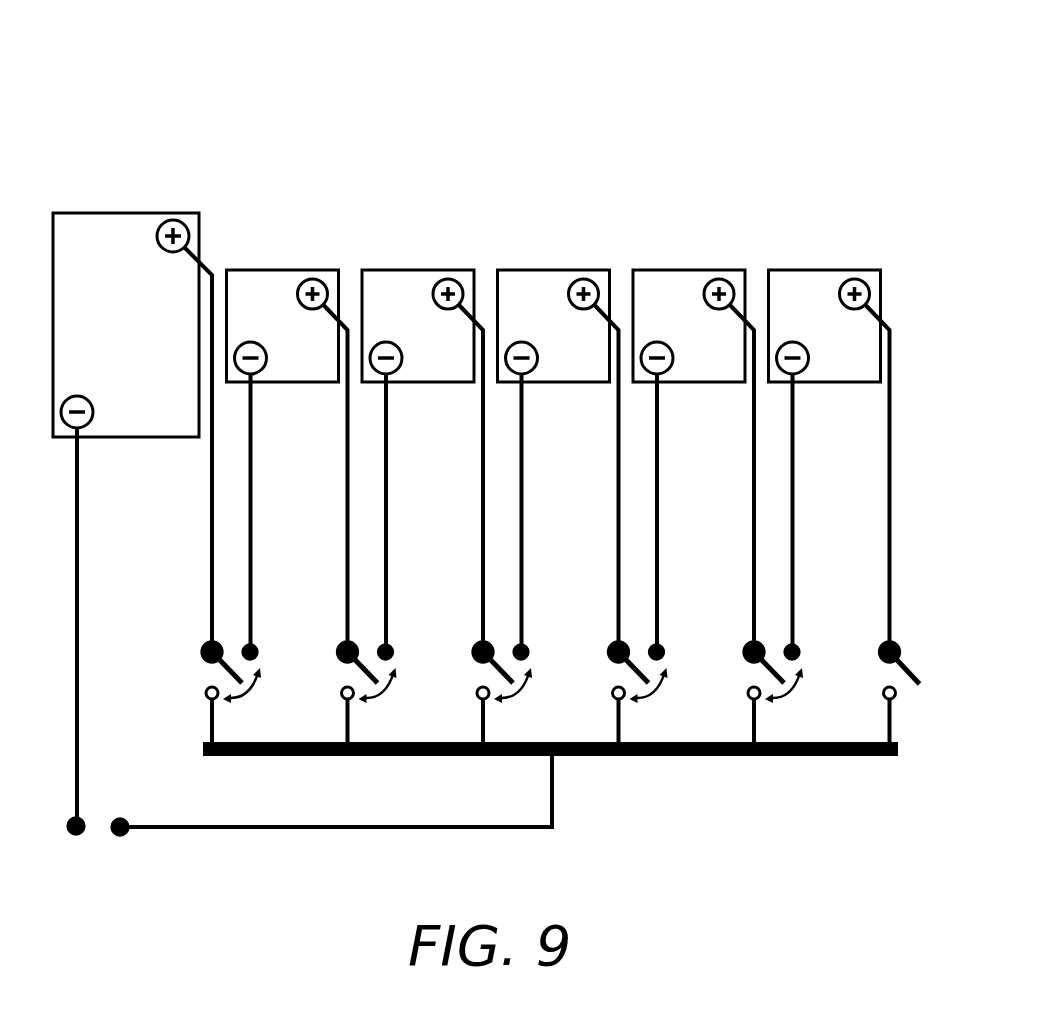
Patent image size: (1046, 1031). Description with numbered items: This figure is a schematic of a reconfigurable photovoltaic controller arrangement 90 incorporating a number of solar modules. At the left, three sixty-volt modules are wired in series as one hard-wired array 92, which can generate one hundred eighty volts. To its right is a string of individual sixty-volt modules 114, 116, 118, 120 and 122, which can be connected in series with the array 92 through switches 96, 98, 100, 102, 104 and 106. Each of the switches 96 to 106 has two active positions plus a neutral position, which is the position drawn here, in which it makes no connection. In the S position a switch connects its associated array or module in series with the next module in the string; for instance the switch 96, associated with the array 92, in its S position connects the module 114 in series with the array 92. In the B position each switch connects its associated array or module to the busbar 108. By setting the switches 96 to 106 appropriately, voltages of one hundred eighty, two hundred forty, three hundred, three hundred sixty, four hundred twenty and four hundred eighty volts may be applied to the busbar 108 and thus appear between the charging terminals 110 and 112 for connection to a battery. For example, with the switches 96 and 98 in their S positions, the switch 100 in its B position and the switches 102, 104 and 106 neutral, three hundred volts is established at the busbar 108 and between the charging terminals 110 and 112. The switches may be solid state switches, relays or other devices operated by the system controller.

The power supply system 90 is at (702, 128).
The hard-wired array 92 is at (122, 213).
The switch 96 is at (206, 643).
The switch 98 is at (340, 643).
The switch 100 is at (478, 643).
The switch 102 is at (614, 643).
The switch 104 is at (748, 643).
The switch 106 is at (884, 643).
The busbar 108 is at (843, 757).
The charging terminal 110 is at (80, 835).
The charging terminal 112 is at (128, 834).
The module 114 is at (276, 270).
The module 116 is at (412, 270).
The module 118 is at (548, 270).
The module 120 is at (683, 270).
The module 122 is at (818, 270).